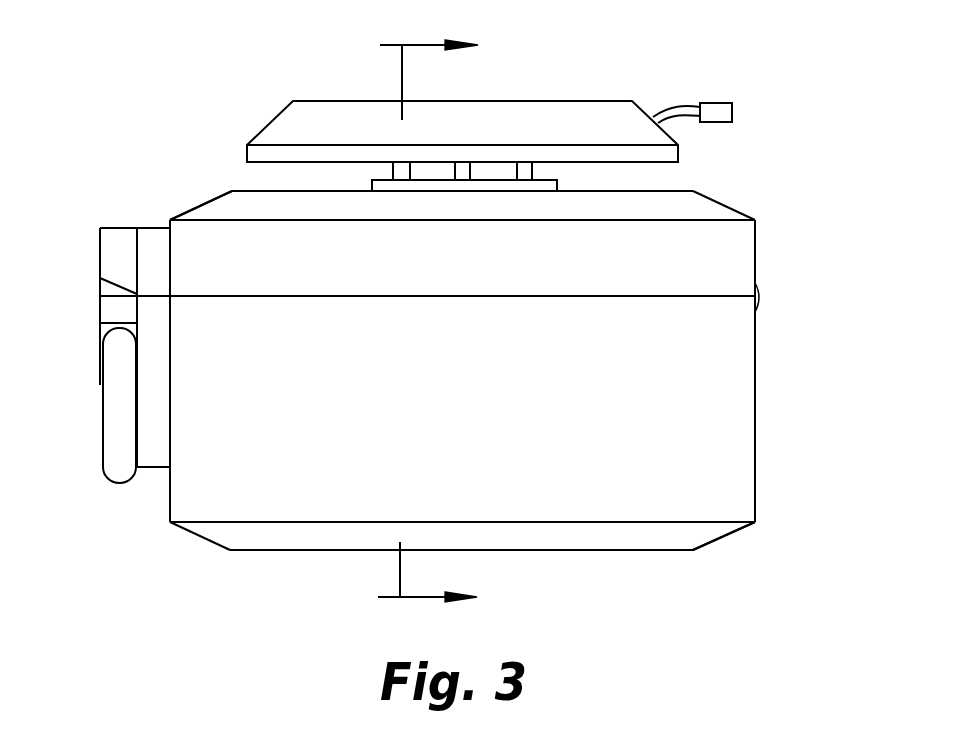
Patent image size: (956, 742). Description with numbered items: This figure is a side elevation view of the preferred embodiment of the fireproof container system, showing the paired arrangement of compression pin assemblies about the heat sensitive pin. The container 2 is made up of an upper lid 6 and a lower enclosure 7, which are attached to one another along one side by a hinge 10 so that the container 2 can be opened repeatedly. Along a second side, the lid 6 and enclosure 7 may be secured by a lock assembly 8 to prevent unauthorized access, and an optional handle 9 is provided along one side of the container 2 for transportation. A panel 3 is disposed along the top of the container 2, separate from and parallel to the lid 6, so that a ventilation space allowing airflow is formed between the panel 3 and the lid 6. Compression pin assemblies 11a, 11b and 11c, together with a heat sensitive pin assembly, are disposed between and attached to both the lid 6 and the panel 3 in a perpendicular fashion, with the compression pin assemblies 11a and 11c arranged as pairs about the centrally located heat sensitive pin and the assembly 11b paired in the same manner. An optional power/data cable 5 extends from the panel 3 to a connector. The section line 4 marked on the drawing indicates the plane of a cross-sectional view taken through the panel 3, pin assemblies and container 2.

The container 2 is at (757, 403).
The panel 3 is at (640, 102).
The section line 4- 4 is at (406, 326).
The power/data cable 5 is at (715, 122).
The upper lid 6 is at (185, 212).
The lower enclosure 7 is at (757, 478).
The lock assembly 8 is at (100, 335).
The handle 9 is at (112, 440).
The hinge 10 is at (757, 297).
The compression pin assembly 11a is at (392, 176).
The compression pin assembly 11b is at (462, 171).
The compression pin assembly 11c is at (537, 180).